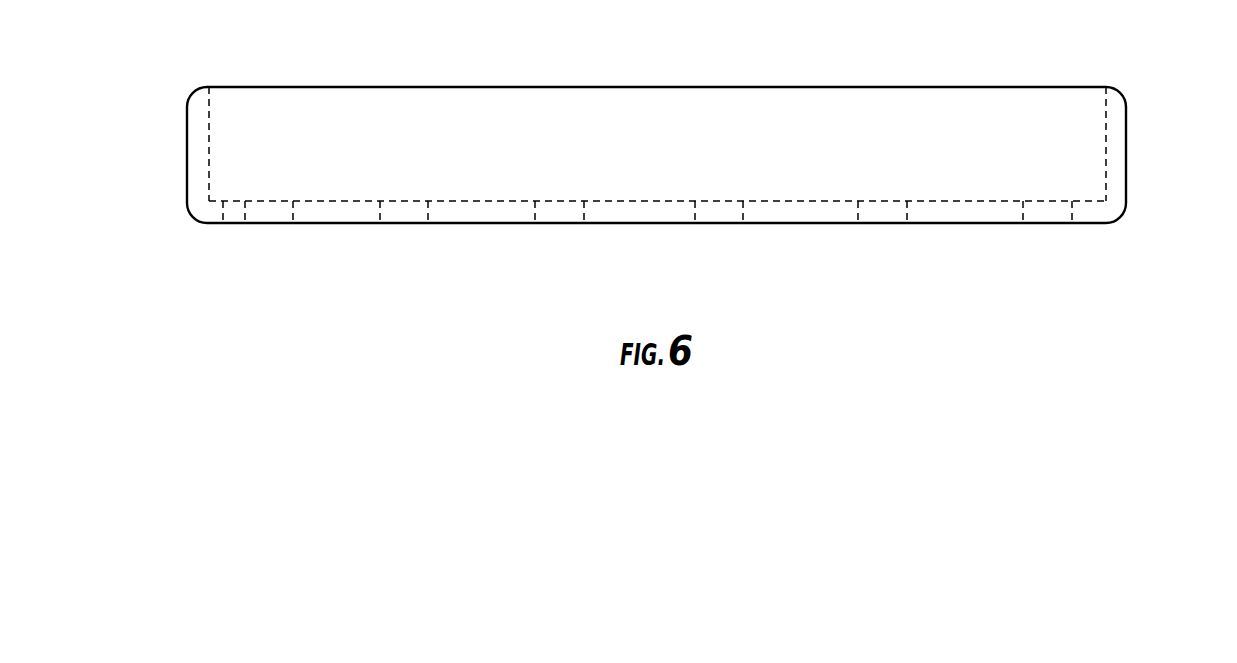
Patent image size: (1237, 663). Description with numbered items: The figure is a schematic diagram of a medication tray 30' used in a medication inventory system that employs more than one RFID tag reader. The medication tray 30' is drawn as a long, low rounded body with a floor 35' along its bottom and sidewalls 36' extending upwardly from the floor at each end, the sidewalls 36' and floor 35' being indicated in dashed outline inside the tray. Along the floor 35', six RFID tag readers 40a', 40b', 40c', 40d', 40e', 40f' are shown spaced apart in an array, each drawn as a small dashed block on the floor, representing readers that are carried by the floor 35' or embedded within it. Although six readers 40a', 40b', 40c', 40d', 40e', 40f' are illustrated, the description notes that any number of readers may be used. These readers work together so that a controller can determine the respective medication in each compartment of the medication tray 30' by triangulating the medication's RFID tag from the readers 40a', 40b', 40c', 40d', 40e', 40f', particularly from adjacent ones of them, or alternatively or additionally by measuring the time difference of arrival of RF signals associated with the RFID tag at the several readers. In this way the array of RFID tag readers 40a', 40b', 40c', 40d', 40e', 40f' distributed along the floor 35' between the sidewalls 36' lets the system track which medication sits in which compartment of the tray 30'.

The medication tray 30' is at (657, 124).
The floor 35' is at (631, 236).
The sidewalls 36' is at (668, 144).
The RFID tag reader 40a' is at (274, 253).
The RFID tag reader 40b' is at (409, 253).
The RFID tag reader 40c' is at (564, 253).
The RFID tag reader 40d' is at (724, 253).
The RFID tag reader 40e' is at (888, 253).
The RFID tag reader 40f' is at (1052, 253).